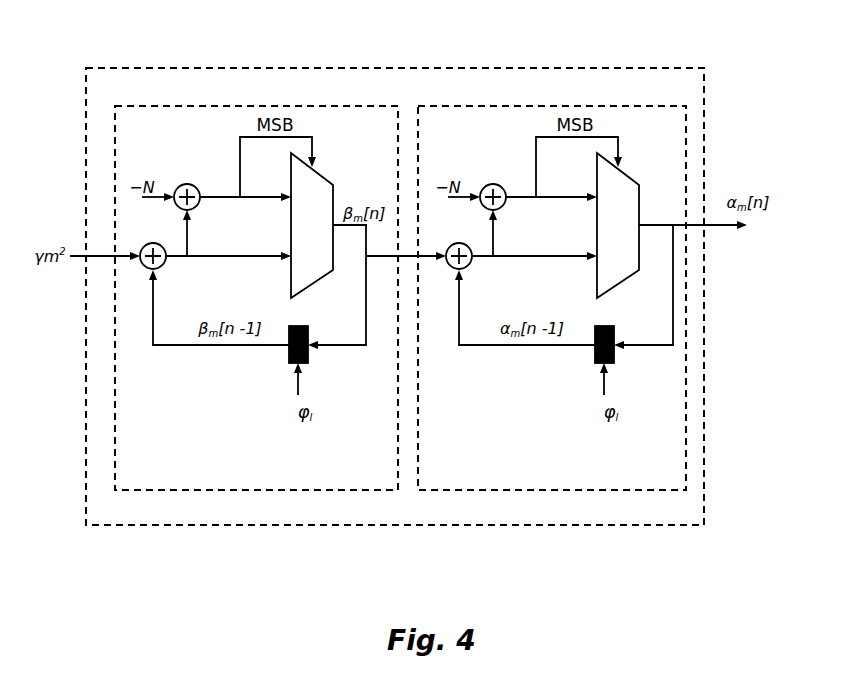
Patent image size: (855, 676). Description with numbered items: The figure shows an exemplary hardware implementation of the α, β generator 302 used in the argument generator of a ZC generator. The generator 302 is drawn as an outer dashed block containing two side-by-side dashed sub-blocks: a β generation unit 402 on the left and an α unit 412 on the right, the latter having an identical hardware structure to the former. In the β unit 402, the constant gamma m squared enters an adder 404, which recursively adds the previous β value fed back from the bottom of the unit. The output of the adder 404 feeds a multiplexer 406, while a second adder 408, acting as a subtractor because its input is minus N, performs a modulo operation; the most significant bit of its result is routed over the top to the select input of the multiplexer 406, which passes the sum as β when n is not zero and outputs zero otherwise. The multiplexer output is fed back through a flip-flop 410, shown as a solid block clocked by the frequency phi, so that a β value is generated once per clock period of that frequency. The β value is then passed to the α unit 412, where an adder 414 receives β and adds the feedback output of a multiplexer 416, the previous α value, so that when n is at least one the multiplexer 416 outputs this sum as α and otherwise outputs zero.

The α, β generator 302 is at (401, 69).
The β generation unit 402 is at (311, 107).
The α unit 412 is at (608, 107).
The adder 404 is at (153, 243).
The adder 408 is at (188, 183).
The multiplexer 406 is at (325, 178).
The flip-flop 410 is at (306, 325).
The adder 414 is at (462, 243).
The multiplexer 416 is at (631, 178).